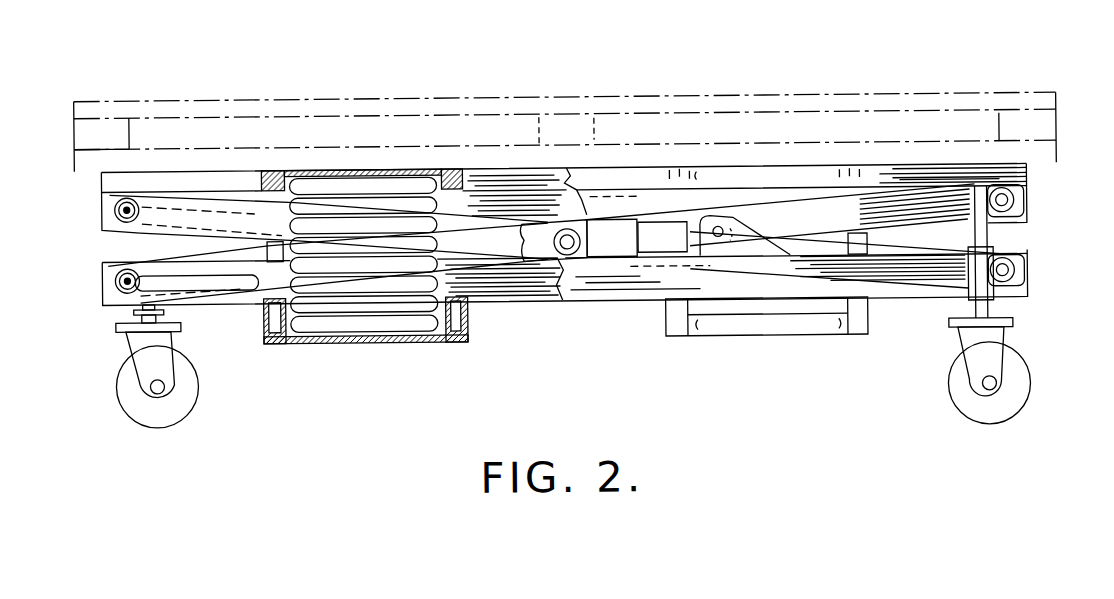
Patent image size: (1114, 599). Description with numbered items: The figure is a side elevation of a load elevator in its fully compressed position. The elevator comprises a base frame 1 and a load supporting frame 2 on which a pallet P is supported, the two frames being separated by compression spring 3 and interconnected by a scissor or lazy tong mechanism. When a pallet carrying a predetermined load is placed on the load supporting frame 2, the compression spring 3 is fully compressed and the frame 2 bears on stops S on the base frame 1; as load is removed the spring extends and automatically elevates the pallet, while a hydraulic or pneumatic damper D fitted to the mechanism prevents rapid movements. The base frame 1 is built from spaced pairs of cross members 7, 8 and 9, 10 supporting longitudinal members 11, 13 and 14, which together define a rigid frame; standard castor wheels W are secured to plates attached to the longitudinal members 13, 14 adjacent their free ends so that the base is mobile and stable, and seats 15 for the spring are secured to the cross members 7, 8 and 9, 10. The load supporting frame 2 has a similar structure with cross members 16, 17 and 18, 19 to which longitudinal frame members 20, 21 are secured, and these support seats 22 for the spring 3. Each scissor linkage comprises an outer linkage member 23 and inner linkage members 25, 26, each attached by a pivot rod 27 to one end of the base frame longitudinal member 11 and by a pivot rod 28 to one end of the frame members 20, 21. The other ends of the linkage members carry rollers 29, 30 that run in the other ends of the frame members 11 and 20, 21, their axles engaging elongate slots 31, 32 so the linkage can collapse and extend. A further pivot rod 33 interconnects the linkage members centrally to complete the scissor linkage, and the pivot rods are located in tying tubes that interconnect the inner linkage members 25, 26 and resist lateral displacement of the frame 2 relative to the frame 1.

The base frame 1 is at (645, 315).
The load supporting frame 2 is at (581, 148).
The compression spring 3 is at (362, 324).
The cross member 7 is at (281, 340).
The cross member 8 is at (452, 341).
The cross member 9 is at (676, 328).
The cross member 10 is at (858, 328).
The longitudinal member 11 is at (512, 278).
The longitudinal member 13 is at (913, 174).
The longitudinal member 14 is at (586, 277).
The seat 15 is at (392, 341).
The cross member 16 is at (276, 168).
The cross member 17 is at (453, 168).
The cross member 18 is at (679, 170).
The cross member 19 is at (857, 172).
The longitudinal frame member 20 is at (628, 196).
The longitudinal frame member 21 is at (487, 205).
The seat 22 is at (340, 168).
The outer linkage member 23 is at (785, 212).
The inner linkage member 25 is at (878, 252).
The inner linkage member 26 is at (243, 219).
The pivot rod 27 is at (1008, 273).
The pivot rod 28 is at (1003, 192).
The roller 29 is at (100, 275).
The roller 30 is at (130, 195).
The elongate slot 31 is at (208, 280).
The elongate slot 32 is at (194, 205).
The pivot rod 33 is at (562, 228).
The damper D is at (611, 240).
The pallet P is at (944, 91).
The stop S is at (276, 256).
The castor wheel W is at (133, 390).